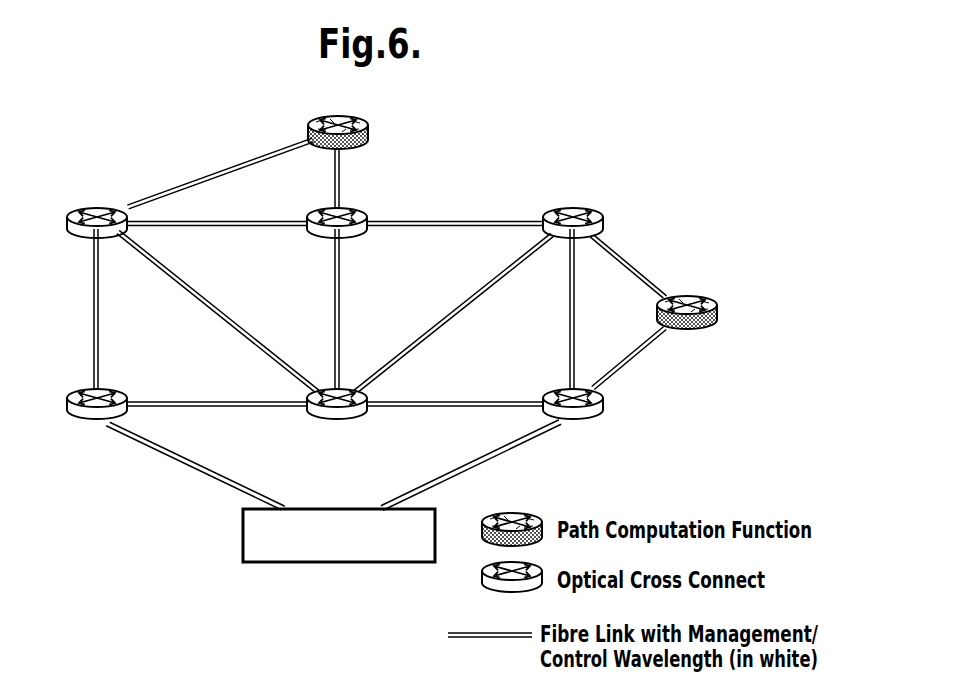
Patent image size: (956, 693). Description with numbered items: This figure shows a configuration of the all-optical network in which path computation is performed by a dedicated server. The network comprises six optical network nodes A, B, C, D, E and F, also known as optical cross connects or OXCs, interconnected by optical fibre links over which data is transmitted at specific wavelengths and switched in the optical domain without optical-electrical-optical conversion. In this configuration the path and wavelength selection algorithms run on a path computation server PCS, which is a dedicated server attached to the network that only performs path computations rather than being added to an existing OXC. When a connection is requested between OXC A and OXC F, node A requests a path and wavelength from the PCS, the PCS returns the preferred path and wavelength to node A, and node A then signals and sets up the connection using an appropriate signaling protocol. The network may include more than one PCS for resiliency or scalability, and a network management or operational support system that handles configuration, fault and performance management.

The optical network node A is at (97, 208).
The optical network node B is at (337, 208).
The optical network node C is at (573, 208).
The optical network node D is at (97, 431).
The optical network node E is at (337, 431).
The optical network node F is at (573, 431).
The path computation server PCS is at (512, 207).